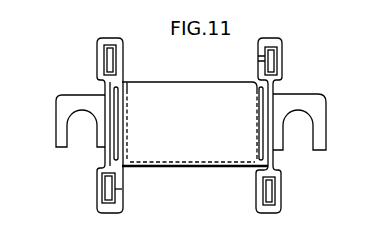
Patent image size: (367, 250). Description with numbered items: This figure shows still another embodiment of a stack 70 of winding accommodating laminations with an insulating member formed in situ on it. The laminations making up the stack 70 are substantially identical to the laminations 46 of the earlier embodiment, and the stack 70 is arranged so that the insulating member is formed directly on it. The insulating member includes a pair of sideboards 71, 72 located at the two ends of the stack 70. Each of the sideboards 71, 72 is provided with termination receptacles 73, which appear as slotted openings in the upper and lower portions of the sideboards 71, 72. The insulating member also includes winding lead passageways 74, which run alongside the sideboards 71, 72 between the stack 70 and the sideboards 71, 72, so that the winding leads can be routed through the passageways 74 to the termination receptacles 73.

The laminations 46 is at (311, 94).
The stack of laminations 70 is at (79, 94).
The sideboard 71 is at (121, 38).
The sideboard 72 is at (265, 38).
The termination receptacles 73 is at (112, 44).
The winding lead passageways 74 is at (116, 127).